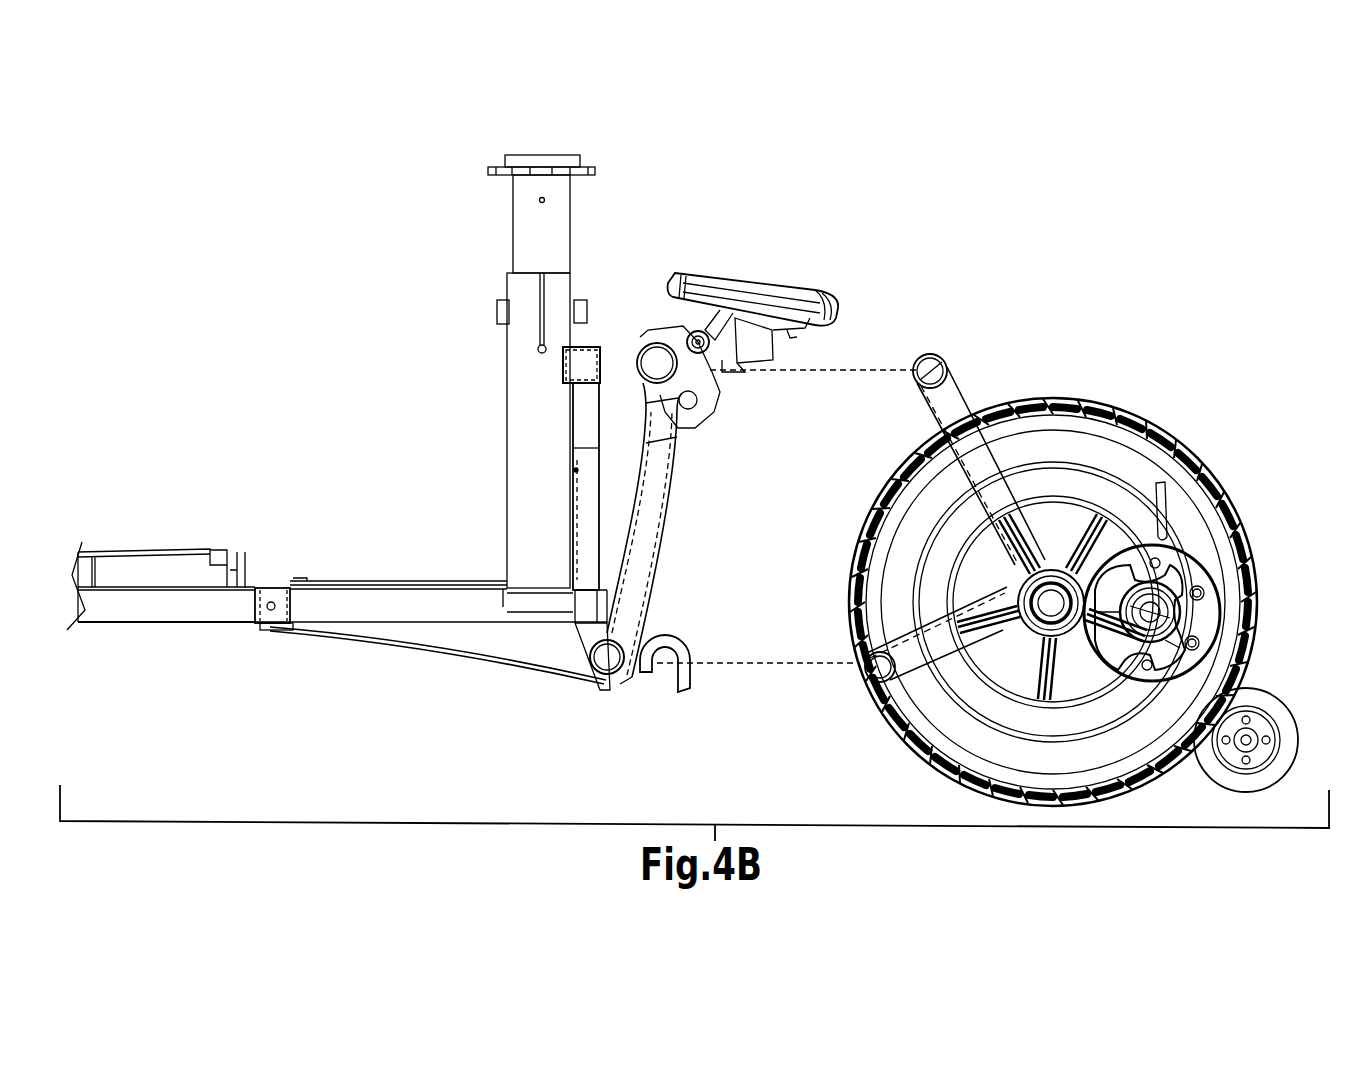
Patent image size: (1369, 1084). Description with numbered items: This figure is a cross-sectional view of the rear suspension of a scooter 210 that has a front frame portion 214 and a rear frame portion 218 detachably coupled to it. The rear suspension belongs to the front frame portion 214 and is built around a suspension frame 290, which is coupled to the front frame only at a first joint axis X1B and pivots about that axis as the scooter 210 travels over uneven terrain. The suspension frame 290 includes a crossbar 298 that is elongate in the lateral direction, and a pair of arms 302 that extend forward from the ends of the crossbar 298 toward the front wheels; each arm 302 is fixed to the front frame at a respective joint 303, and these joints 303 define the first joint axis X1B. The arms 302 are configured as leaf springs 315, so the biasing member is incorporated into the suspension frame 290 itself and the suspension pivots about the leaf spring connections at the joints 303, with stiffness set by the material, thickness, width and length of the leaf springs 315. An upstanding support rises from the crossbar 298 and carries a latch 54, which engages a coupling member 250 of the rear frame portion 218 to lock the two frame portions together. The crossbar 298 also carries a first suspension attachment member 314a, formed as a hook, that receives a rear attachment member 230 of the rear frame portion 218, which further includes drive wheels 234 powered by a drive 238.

The scooter 210 is at (886, 264).
The front frame portion 214 is at (395, 437).
The latch 54 is at (740, 287).
The coupling member 250 is at (932, 358).
The rear frame portion 218 is at (1135, 395).
The drive wheels 234 is at (1210, 475).
The drive 238 is at (1190, 565).
The suspension frame 290 is at (680, 494).
The first joint axis X1B is at (274, 603).
The joint 303 is at (272, 624).
The leaf spring 315 is at (425, 648).
The arm 302 is at (512, 662).
The crossbar 298 is at (617, 674).
The first suspension attachment member 314a is at (682, 650).
The rear attachment member 230 is at (890, 722).